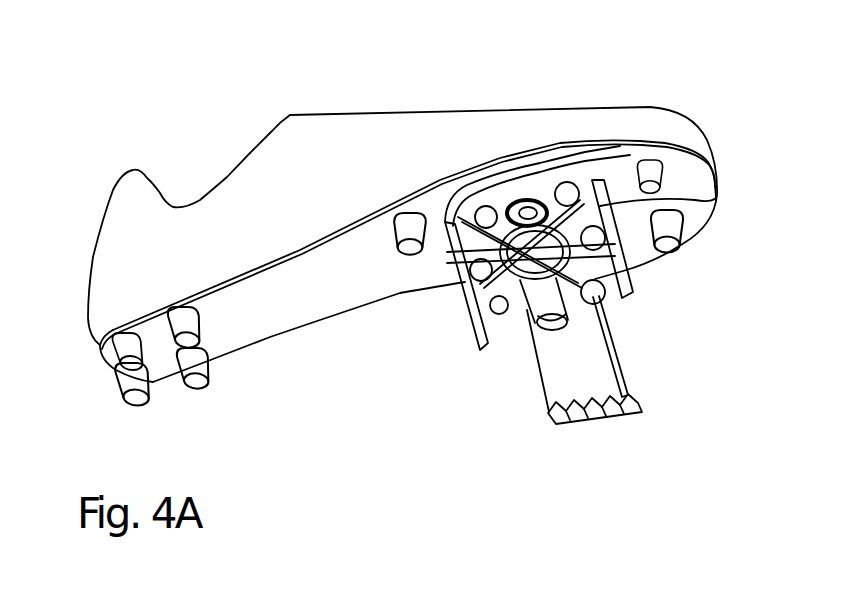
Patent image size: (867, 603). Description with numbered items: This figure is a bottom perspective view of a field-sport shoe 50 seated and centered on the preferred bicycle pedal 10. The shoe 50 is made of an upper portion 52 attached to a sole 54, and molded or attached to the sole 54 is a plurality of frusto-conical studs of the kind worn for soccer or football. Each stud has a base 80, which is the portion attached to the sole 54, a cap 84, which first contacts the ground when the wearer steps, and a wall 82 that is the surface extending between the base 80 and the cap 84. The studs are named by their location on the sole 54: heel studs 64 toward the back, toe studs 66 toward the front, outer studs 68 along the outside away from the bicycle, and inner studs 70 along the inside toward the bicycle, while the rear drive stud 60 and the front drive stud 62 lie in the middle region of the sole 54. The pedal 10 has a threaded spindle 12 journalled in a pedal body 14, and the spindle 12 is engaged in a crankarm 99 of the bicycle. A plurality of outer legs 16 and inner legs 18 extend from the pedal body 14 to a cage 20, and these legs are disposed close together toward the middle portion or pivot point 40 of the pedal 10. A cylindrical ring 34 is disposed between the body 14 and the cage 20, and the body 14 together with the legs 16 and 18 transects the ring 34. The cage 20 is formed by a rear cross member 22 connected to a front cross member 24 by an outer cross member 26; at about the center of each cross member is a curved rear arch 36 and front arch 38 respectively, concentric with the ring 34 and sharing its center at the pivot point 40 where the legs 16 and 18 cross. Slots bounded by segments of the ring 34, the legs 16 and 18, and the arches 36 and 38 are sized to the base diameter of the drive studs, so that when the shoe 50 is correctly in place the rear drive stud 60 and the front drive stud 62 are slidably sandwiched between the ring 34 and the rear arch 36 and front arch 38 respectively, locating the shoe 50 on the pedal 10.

The pedal 10 is at (462, 313).
The threaded spindle 12 is at (552, 333).
The pedal body 14 is at (548, 296).
The outer legs 16 is at (594, 188).
The inner legs 18 is at (604, 286).
The cage 20 is at (470, 187).
The rear cross member 22 is at (478, 325).
The front cross member 24 is at (617, 258).
The outer cross member 26 is at (561, 182).
The cylindrical ring 34 is at (463, 233).
The rear arch 36 is at (465, 297).
The front arch 38 is at (718, 199).
The pivot point 40 is at (549, 232).
The shoe 50 is at (342, 94).
The upper portion 52 is at (287, 187).
The sole 54 is at (312, 291).
The rear drive stud 60 is at (470, 268).
The front drive stud 62 is at (598, 228).
The heel studs 64 is at (185, 336).
The toe studs 66 is at (672, 246).
The outer studs 68 is at (487, 206).
The inner studs 70 is at (606, 300).
The base 80 is at (104, 347).
The wall 82 is at (112, 347).
The cap 84 is at (126, 370).
The crankarm 99 is at (532, 404).